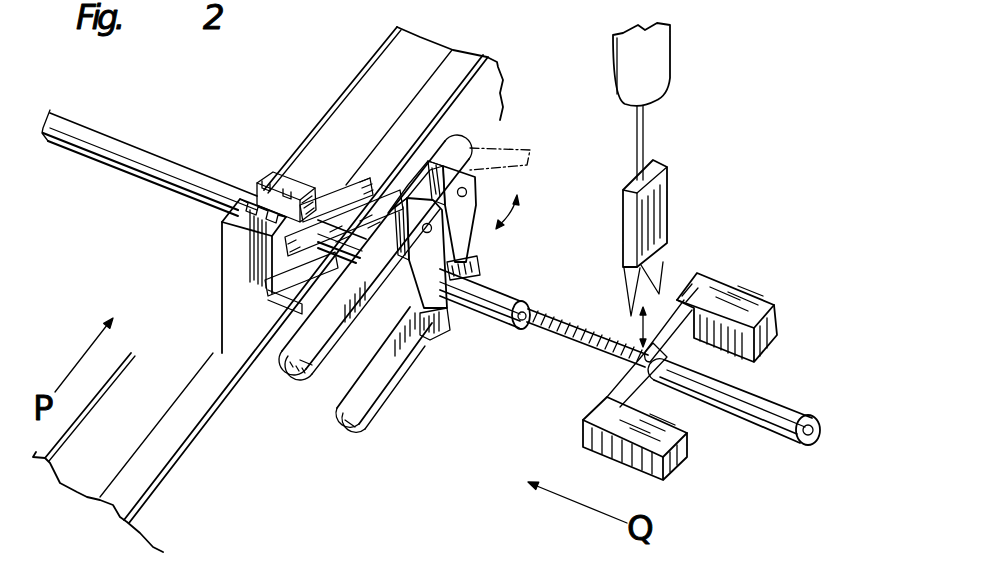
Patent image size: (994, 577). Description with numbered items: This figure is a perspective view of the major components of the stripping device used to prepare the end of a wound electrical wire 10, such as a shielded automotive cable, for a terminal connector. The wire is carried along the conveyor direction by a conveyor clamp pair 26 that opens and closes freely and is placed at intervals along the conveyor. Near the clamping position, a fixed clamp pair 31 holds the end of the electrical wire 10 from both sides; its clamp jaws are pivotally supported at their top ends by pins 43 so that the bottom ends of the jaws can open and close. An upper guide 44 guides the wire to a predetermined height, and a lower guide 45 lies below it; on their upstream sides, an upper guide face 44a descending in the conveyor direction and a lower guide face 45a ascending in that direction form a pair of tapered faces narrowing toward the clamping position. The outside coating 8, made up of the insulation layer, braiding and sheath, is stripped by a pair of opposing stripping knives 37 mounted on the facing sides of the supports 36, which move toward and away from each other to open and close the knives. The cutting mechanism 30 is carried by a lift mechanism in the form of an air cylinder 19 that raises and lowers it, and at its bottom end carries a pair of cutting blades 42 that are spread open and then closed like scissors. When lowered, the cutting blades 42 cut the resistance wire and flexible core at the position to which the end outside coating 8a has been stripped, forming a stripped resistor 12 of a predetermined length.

The outside coating 8 is at (97, 140).
The end outside coating 8a is at (753, 402).
The electrical wire 10 is at (111, 178).
The stripped resistor 12 is at (543, 343).
The air cylinder 19 is at (653, 65).
The conveyor clamp pair 26 is at (270, 173).
The cutting mechanism 30 is at (677, 186).
The fixed clamp pair 31 is at (455, 247).
The support 36 is at (740, 305).
The stripping knife 37 is at (723, 290).
The cutting blade 42 is at (650, 262).
The pin 43 is at (462, 192).
The upper guide 44 is at (262, 368).
The upper guide face 44a is at (315, 355).
The lower guide 45 is at (390, 377).
The lower guide face 45a is at (340, 430).